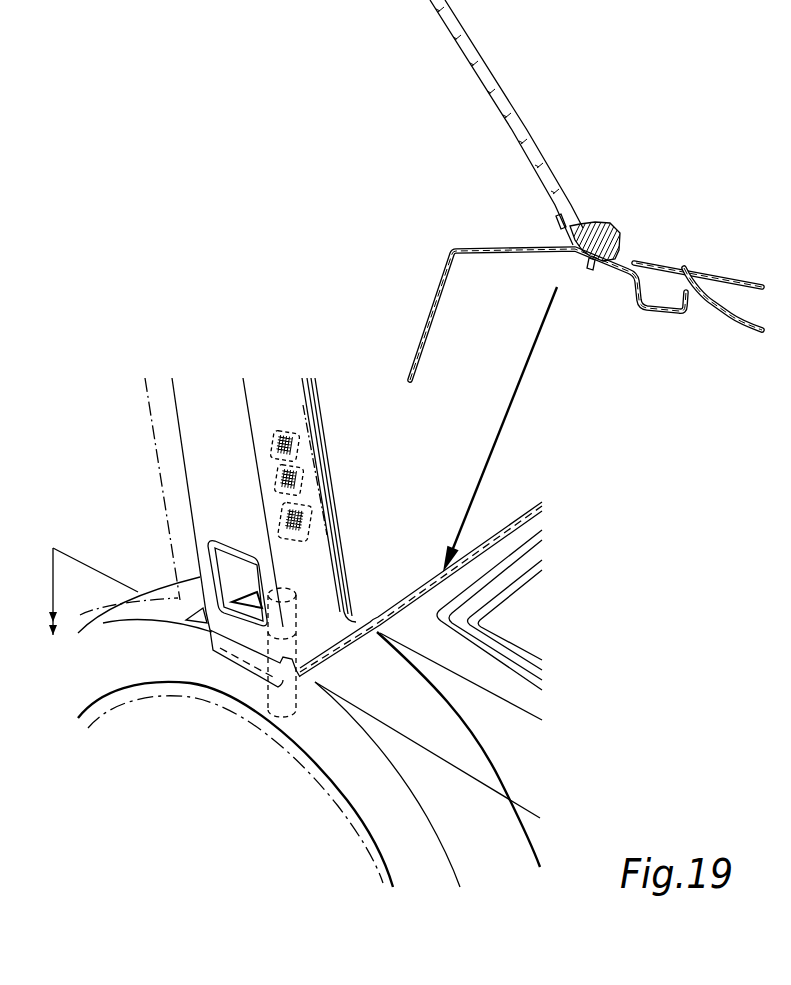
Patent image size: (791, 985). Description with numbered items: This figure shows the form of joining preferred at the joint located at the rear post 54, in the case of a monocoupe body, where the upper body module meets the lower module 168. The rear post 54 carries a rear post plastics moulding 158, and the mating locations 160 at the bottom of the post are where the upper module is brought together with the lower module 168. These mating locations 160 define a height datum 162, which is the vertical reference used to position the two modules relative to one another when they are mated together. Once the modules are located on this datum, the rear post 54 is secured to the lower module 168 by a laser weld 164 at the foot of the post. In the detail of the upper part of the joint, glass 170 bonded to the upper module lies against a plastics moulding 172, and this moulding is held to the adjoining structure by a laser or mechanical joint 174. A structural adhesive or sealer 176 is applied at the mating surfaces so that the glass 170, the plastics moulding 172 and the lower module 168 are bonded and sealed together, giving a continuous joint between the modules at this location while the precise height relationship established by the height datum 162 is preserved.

The rear post 54 is at (177, 412).
The rear post plastics moulding 158 is at (165, 508).
The mating locations 160 is at (287, 717).
The height datum defined by mating locations 162 is at (52, 572).
The laser weld 164 is at (253, 660).
The lower module 168 is at (670, 262).
The glass bonded to upper module 170 is at (472, 62).
The plastics moulding 172 is at (603, 224).
The laser or mechanical joint 174 is at (602, 265).
The structural adhesive or sealer 176 is at (572, 247).